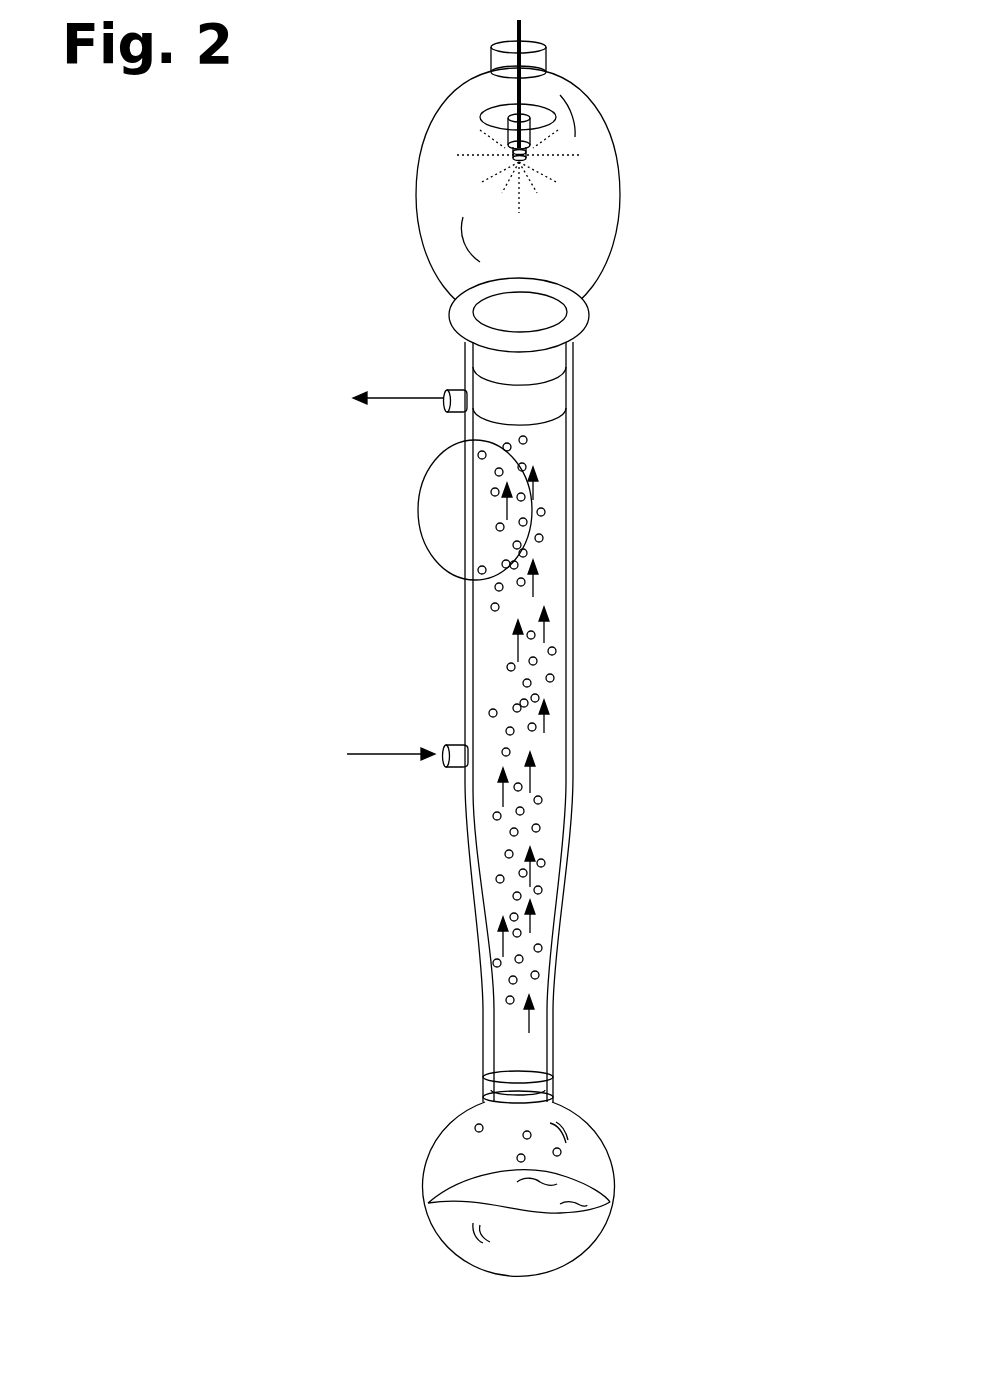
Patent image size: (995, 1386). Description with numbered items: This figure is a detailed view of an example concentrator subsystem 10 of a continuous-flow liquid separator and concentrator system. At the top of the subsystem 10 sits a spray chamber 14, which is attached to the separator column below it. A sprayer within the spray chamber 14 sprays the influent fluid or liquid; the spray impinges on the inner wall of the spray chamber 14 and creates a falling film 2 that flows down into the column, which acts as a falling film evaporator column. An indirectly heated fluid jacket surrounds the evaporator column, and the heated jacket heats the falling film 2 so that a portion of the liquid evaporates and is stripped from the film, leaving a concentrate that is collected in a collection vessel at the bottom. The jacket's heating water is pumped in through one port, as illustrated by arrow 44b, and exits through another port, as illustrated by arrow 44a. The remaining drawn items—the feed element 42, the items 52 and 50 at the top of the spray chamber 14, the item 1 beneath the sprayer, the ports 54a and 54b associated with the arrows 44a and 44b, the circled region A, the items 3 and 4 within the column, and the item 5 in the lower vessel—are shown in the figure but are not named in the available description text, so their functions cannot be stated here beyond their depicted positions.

The concentrator subsystem 10 is at (702, 408).
The spray chamber 14 is at (620, 213).
The feed tube 42 is at (522, 98).
The opening 52 is at (485, 110).
The nozzle 50 is at (527, 148).
The spray 1 is at (468, 156).
The falling film 2 is at (567, 763).
The upper port 54a is at (445, 390).
The arrow 44a is at (383, 399).
The lower port 54b is at (445, 745).
The arrow 44b is at (388, 756).
The detail region A is at (425, 543).
The bubbles 3 is at (545, 510).
The flow direction 4 is at (560, 610).
The liquid reservoir 5 is at (595, 1182).